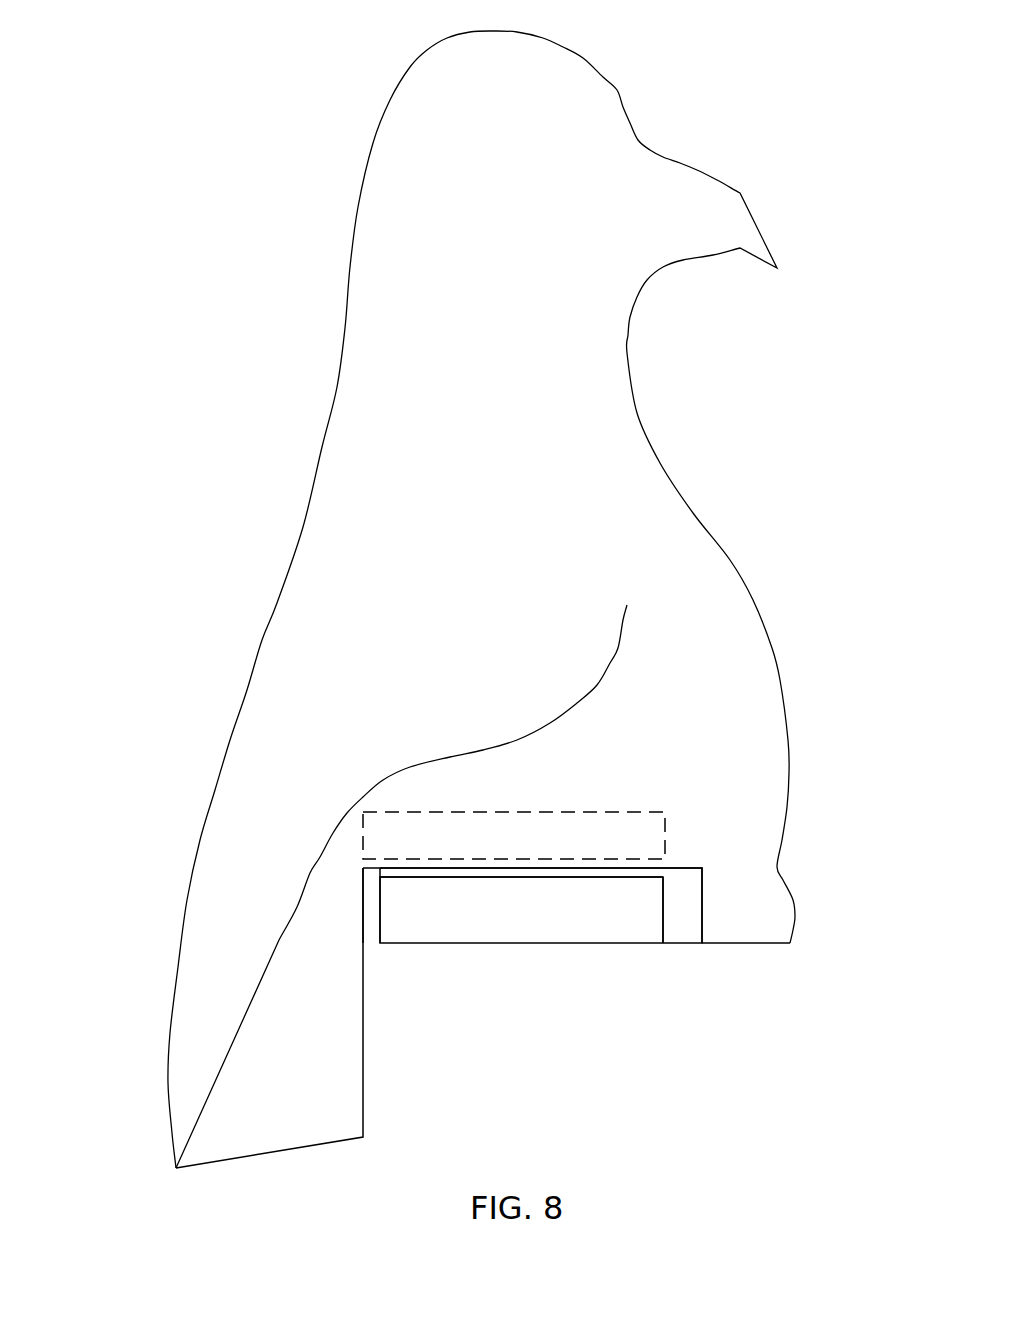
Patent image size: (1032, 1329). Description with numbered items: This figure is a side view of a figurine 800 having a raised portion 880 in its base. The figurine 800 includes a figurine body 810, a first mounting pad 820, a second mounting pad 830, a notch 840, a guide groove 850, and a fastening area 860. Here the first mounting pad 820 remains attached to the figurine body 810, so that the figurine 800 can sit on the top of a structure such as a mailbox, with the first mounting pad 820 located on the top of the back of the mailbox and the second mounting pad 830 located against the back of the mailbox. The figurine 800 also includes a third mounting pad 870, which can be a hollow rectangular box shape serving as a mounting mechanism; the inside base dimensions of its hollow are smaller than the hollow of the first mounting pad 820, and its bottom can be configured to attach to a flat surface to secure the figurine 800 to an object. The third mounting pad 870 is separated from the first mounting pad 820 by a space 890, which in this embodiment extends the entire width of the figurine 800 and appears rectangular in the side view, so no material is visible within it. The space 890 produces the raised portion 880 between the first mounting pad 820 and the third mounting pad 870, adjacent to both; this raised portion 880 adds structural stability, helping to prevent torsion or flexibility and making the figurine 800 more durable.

The figurine 800 is at (168, 40).
The figurine body 810 is at (322, 447).
The first mounting pad 820 is at (470, 943).
The second mounting pad 830 is at (365, 1112).
The notch 840 is at (368, 913).
The guide groove 850 is at (513, 873).
The fastening area 860 is at (658, 810).
The third mounting pad 870 is at (752, 947).
The raised portion 880 is at (675, 870).
The space 890 is at (679, 932).